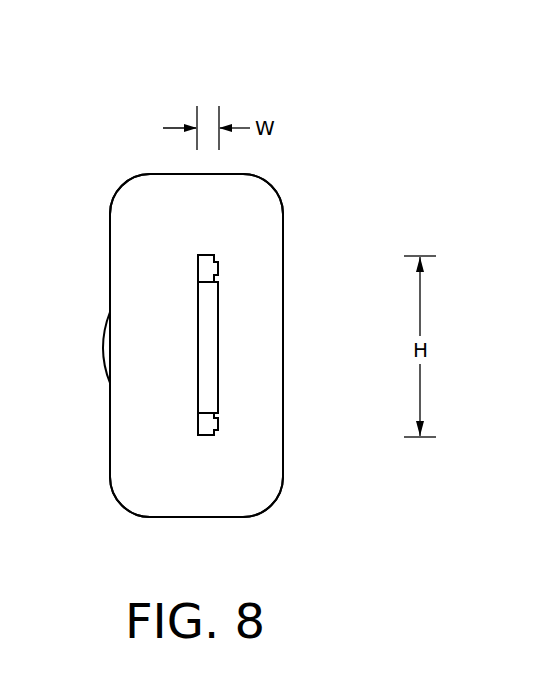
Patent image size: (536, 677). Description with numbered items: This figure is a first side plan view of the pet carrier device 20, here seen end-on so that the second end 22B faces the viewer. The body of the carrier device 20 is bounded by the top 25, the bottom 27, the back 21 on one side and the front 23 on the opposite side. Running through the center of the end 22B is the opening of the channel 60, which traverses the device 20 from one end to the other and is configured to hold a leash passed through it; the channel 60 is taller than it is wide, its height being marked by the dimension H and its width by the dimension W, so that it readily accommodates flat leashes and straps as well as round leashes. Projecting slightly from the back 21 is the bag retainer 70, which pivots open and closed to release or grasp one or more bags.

The pet carrier device 20 is at (238, 75).
The second end 22B is at (162, 452).
The top 25 is at (168, 178).
The back 21 is at (110, 405).
The front 23 is at (283, 452).
The bottom 27 is at (213, 518).
The bag retainer 70 is at (100, 348).
The channel 60 is at (208, 362).